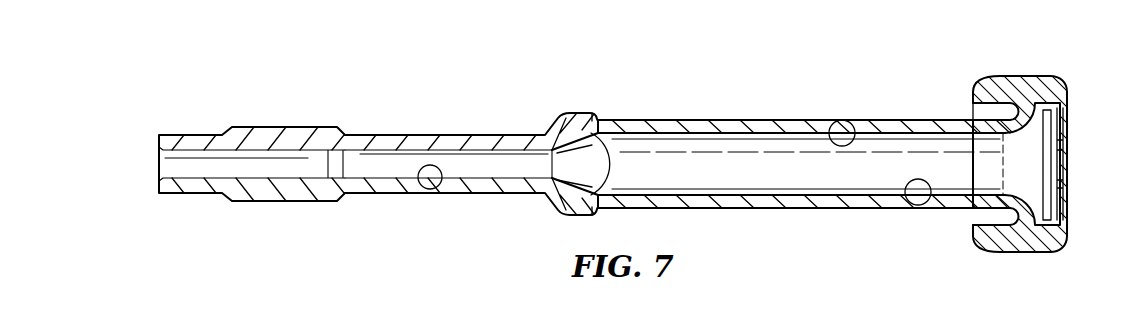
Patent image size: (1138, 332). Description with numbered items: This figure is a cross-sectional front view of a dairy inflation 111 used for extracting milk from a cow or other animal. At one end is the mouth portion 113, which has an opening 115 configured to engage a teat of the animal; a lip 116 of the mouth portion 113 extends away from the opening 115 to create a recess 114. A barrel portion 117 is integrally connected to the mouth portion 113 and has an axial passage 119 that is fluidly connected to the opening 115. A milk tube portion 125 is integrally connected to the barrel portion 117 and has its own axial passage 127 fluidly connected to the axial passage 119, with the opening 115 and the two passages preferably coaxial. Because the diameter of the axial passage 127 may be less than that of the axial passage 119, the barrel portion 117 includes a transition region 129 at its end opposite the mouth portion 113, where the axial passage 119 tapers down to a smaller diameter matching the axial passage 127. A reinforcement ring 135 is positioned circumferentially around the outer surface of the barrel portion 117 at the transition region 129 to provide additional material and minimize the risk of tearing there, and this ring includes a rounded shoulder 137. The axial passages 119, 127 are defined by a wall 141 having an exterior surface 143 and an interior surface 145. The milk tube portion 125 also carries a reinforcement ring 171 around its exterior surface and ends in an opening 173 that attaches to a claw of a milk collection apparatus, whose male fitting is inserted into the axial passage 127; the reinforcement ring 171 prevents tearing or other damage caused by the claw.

The dairy inflation 111 is at (669, 77).
The mouth portion 113 is at (1033, 76).
The recess 114 is at (969, 109).
The opening 115 is at (1064, 165).
The lip 116 is at (999, 252).
The barrel portion 117 is at (725, 120).
The axial passage 119 is at (836, 120).
The milk tube portion 125 is at (428, 133).
The axial passage 127 is at (437, 189).
The transition region 129 is at (566, 109).
The reinforcement ring 135 is at (561, 211).
The rounded shoulder 137 is at (597, 113).
The wall 141 is at (743, 202).
The exterior surface 143 is at (838, 210).
The interior surface 145 is at (922, 208).
The reinforcement ring 171 is at (265, 127).
The opening 173 is at (158, 166).